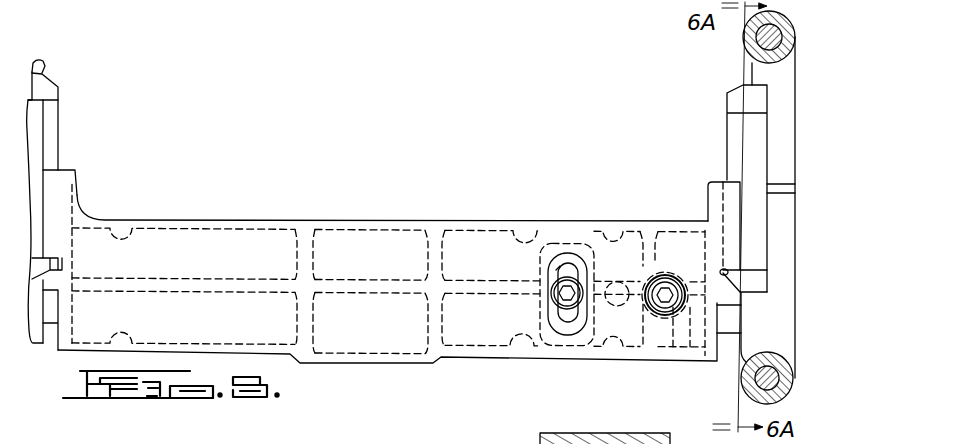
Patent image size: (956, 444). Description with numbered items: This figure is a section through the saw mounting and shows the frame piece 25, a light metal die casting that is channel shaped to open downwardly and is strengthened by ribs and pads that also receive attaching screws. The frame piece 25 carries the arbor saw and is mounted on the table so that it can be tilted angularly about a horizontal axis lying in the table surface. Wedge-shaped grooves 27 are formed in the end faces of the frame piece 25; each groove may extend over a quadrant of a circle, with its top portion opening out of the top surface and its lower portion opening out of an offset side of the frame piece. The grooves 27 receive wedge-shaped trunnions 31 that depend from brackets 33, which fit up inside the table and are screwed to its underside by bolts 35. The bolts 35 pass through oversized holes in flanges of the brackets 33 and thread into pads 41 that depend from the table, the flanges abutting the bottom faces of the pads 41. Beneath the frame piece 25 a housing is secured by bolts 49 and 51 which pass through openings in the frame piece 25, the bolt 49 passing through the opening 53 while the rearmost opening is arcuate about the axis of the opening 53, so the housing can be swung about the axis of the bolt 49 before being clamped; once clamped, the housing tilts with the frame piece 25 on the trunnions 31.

The frame piece 25 is at (262, 220).
The wedge-shaped grooves 27 is at (58, 265).
The wedge-shaped trunnions 31 is at (58, 129).
The brackets 33 is at (45, 64).
The bolts 35 is at (745, 52).
The pads 41 is at (756, 68).
The bolt 49 is at (653, 307).
The bolt 51 is at (552, 300).
The opening 53 is at (552, 268).